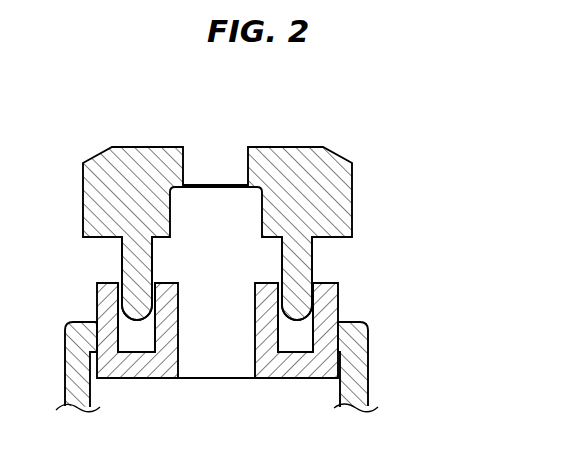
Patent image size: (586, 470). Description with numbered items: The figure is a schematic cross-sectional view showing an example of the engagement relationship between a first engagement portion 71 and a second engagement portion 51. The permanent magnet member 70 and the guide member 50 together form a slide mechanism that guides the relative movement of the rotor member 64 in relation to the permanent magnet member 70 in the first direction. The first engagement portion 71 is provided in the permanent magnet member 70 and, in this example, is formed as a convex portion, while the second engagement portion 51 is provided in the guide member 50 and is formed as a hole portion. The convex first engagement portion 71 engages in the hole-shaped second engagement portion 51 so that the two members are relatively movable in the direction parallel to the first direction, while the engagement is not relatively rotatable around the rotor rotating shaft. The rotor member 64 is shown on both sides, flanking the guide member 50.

The permanent magnet member 70 is at (298, 156).
The first engagement portion 71 is at (302, 272).
The guide member 50 is at (288, 370).
The second engagement portion 51 is at (281, 331).
The rotor member 64 is at (360, 378).